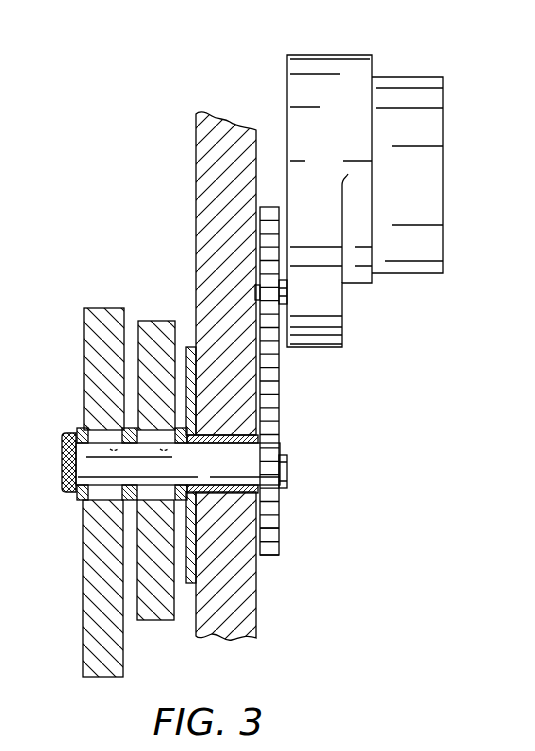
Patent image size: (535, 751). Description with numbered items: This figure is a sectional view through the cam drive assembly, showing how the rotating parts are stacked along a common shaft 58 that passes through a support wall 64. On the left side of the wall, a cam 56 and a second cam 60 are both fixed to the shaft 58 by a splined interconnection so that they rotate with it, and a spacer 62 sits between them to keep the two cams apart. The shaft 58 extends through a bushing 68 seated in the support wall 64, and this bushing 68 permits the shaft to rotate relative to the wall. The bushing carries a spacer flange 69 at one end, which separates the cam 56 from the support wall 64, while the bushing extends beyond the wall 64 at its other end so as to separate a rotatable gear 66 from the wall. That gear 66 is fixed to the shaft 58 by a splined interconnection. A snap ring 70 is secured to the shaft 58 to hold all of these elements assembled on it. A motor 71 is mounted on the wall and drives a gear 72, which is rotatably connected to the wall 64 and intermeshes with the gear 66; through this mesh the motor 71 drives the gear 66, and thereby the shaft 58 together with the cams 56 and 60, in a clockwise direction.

The cam 56 is at (156, 323).
The shaft 58 is at (62, 447).
The second cam 60 is at (102, 312).
The spacer 62 is at (103, 588).
The support wall 64 is at (256, 617).
The rotatable gear 66 is at (272, 536).
The bushing 68 is at (232, 498).
The spacer flange 69 is at (155, 560).
The snap ring 70 is at (279, 443).
The motor 71 is at (302, 62).
The gear 72 is at (269, 207).